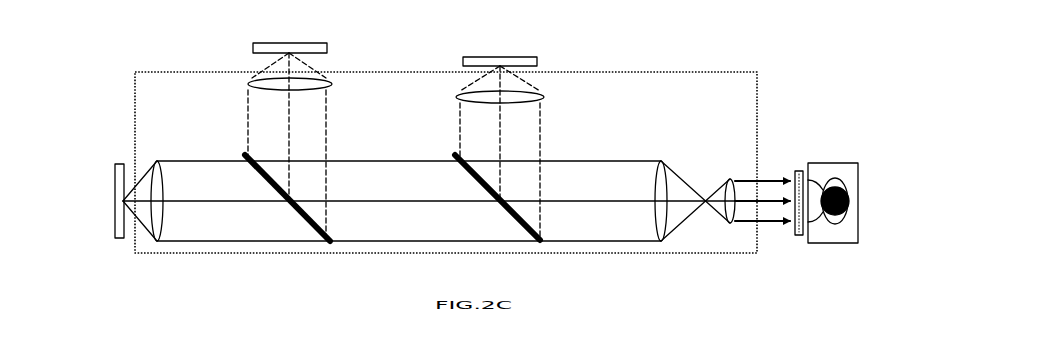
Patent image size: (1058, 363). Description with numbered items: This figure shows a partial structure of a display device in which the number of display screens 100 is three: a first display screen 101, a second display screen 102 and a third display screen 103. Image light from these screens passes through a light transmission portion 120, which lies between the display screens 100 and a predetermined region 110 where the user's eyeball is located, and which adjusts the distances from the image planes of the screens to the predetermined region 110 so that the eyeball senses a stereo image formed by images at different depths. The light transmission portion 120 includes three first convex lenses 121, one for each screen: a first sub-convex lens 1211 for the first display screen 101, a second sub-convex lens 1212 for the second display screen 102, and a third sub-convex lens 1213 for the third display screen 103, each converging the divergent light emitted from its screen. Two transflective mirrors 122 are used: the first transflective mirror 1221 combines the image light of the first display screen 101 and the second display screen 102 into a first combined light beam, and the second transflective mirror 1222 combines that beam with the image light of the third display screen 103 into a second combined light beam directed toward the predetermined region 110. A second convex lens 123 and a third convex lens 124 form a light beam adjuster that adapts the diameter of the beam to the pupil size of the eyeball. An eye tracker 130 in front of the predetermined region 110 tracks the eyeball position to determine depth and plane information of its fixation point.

The display screens 100 is at (286, 132).
The first display screen 101 is at (95, 201).
The second display screen 102 is at (257, 132).
The third display screen 103 is at (468, 139).
The predetermined region 110 is at (861, 203).
The light transmission portion 120 is at (427, 152).
The first convex lenses 121 is at (294, 171).
The first sub-convex lens 1211 is at (104, 212).
The second sub-convex lens 1212 is at (246, 96).
The third sub-convex lens 1213 is at (458, 109).
The transflective mirrors 122 is at (367, 215).
The first transflective mirror 1221 is at (262, 215).
The second transflective mirror 1222 is at (472, 215).
The second convex lens 123 is at (650, 216).
The third convex lens 124 is at (715, 227).
The eye tracker 130 is at (829, 185).